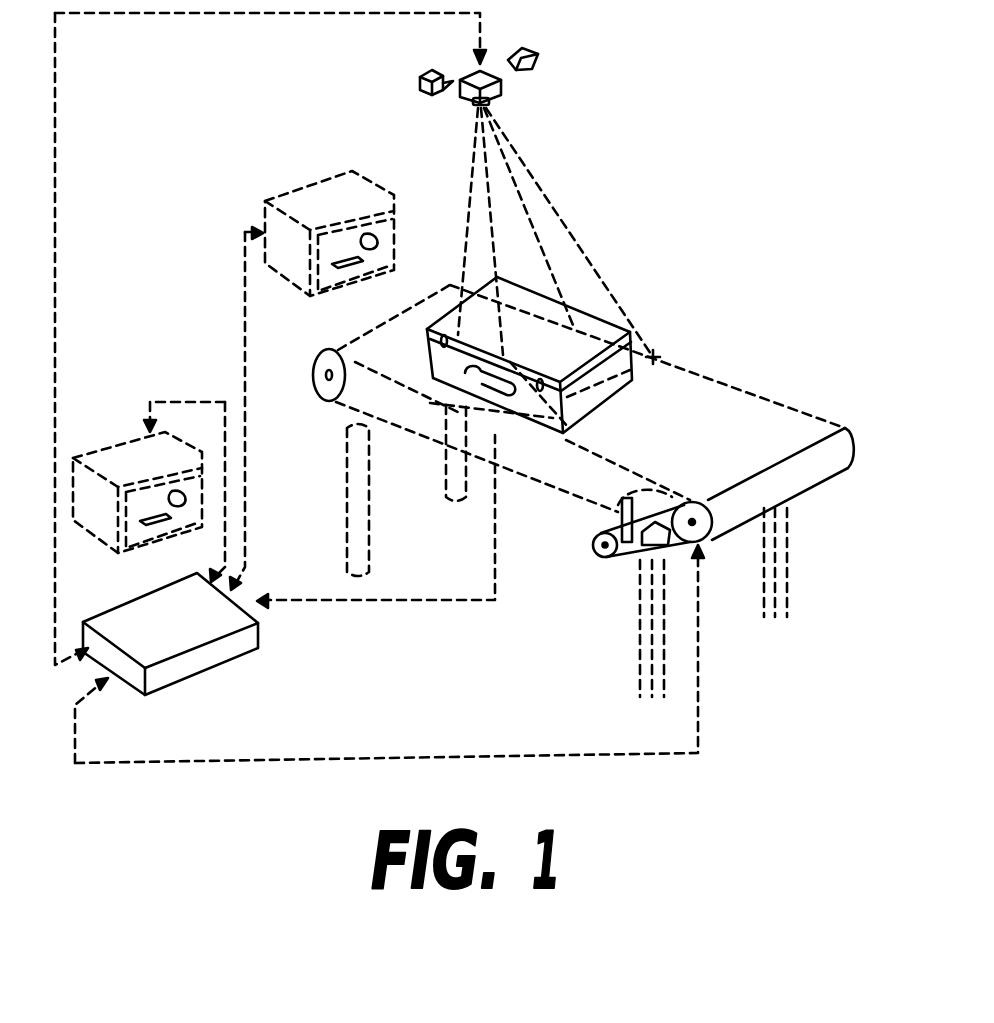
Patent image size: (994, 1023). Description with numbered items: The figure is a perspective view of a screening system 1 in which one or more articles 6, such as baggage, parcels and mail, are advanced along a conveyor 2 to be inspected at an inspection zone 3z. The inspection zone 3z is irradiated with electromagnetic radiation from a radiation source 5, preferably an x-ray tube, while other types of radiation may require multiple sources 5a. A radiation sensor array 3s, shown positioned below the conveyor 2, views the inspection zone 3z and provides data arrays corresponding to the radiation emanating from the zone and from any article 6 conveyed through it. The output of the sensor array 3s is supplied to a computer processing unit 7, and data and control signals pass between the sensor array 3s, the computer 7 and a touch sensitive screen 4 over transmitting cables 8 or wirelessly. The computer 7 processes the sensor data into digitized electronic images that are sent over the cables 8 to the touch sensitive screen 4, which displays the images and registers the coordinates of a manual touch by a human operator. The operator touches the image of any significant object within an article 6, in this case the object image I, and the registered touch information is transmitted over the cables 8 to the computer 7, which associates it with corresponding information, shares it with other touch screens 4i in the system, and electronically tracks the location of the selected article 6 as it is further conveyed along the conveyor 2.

The screening system 1 is at (708, 160).
The conveyor 2 is at (745, 462).
The inspection zone 3z is at (597, 193).
The radiation sensor array 3s is at (655, 368).
The touch sensitive screen 4 is at (116, 450).
The other touch screen 4i is at (310, 182).
The radiation source 5 is at (493, 100).
The multiple radiation sources 5a is at (418, 84).
The article 6 is at (607, 322).
The computer processing unit 7 is at (205, 632).
The transmitting cables 8 is at (58, 202).
The object image I is at (188, 500).